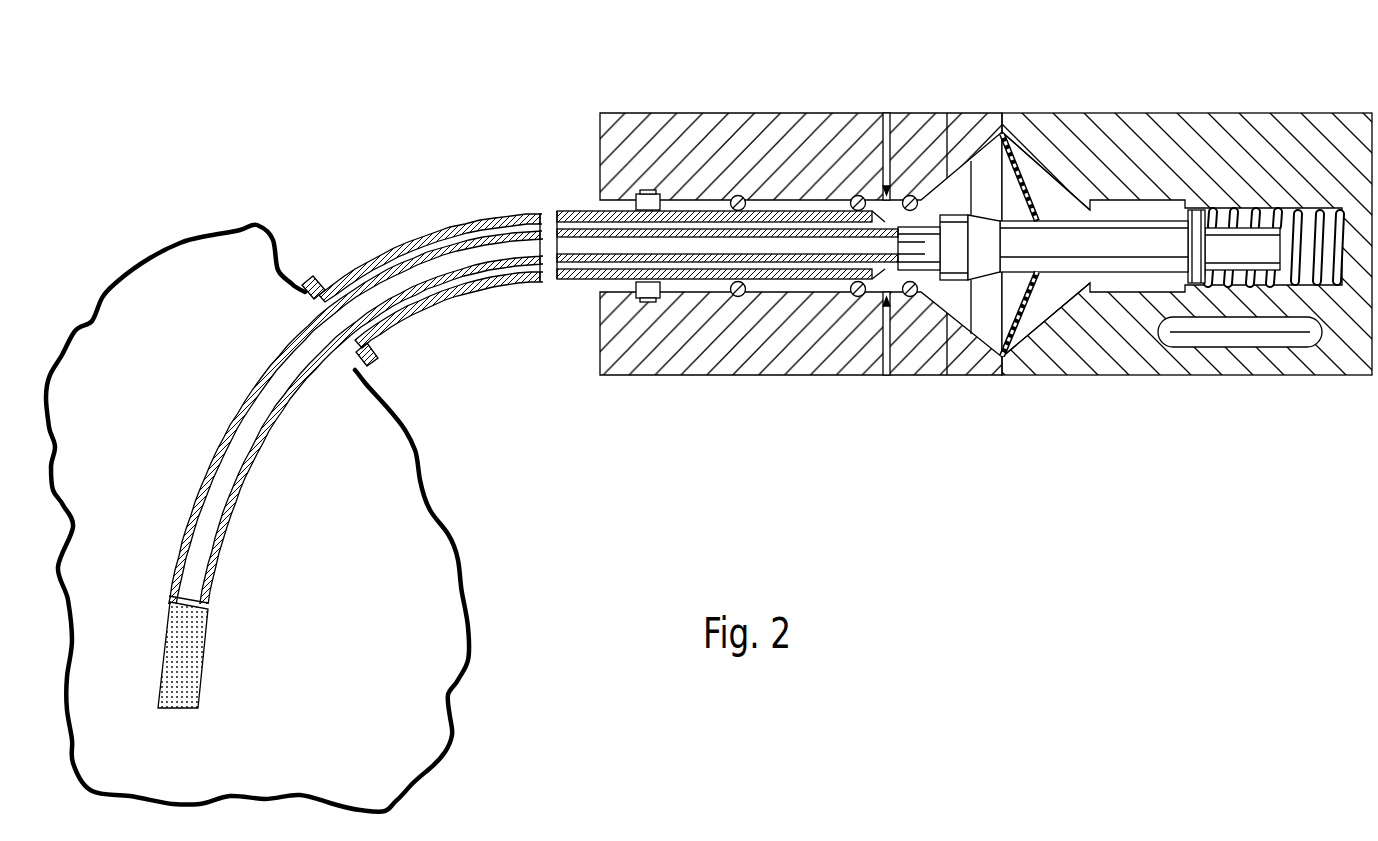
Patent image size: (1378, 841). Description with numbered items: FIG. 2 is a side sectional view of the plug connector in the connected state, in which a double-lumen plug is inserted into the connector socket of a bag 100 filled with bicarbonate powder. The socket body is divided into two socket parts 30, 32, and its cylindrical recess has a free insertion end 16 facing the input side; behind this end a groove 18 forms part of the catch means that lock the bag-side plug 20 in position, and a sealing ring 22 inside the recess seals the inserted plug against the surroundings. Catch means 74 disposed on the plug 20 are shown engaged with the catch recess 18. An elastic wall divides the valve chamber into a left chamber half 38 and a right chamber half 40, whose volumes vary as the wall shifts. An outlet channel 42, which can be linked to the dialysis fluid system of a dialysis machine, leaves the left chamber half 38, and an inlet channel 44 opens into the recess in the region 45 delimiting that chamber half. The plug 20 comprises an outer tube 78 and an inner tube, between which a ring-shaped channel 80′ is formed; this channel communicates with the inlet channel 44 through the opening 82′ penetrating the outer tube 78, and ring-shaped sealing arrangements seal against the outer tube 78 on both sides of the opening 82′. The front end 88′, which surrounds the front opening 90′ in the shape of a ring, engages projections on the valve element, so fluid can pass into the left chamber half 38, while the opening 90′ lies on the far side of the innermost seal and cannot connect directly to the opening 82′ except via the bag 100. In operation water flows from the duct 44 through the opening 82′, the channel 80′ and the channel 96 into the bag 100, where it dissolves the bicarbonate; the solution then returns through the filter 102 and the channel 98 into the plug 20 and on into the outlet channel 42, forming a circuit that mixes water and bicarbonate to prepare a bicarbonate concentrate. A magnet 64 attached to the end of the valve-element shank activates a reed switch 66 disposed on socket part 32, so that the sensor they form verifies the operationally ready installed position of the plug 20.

The free insertion end 16 is at (572, 202).
The groove 18 is at (647, 190).
The bag-side plug 20 is at (574, 290).
The sealing ring 22 is at (738, 298).
The socket part 30 is at (748, 135).
The socket part 32 is at (1155, 135).
The left chamber half 38 is at (958, 315).
The right chamber half 40 is at (1035, 300).
The outlet channel 42 is at (940, 200).
The inlet channel 44 is at (886, 378).
The region delimiting the valve chamber half 45 is at (883, 112).
The magnet 64 is at (1274, 215).
The reed switch 66 is at (1228, 340).
The catch means 74 is at (646, 302).
The outer tube 78 is at (850, 200).
The ring-shaped channel 80′ is at (700, 282).
The opening 82′ is at (855, 298).
The front end 88′ is at (915, 196).
The front opening 90′ is at (912, 298).
The channel 96 is at (362, 285).
The channel 98 is at (456, 262).
The bag 100 is at (426, 426).
The filter 102 is at (190, 660).